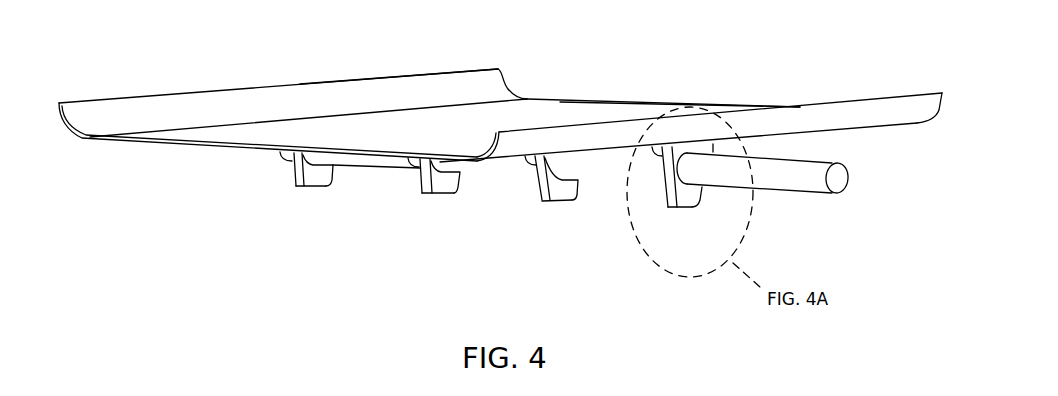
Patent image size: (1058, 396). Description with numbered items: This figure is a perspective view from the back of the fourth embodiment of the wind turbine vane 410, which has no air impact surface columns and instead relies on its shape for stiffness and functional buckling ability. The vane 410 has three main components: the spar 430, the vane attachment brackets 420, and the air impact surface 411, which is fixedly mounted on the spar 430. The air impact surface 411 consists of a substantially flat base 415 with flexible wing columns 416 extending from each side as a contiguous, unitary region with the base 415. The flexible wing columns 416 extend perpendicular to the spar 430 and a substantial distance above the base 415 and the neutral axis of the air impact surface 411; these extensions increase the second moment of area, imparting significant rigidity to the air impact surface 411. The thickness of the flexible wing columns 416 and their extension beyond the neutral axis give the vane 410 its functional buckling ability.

The vane 410 is at (500, 141).
The air impact surface 411 is at (537, 115).
The base 415 is at (308, 132).
The flexible wing columns 416 is at (413, 92).
The vane attachment brackets 420 is at (315, 172).
The spar 430 is at (802, 182).